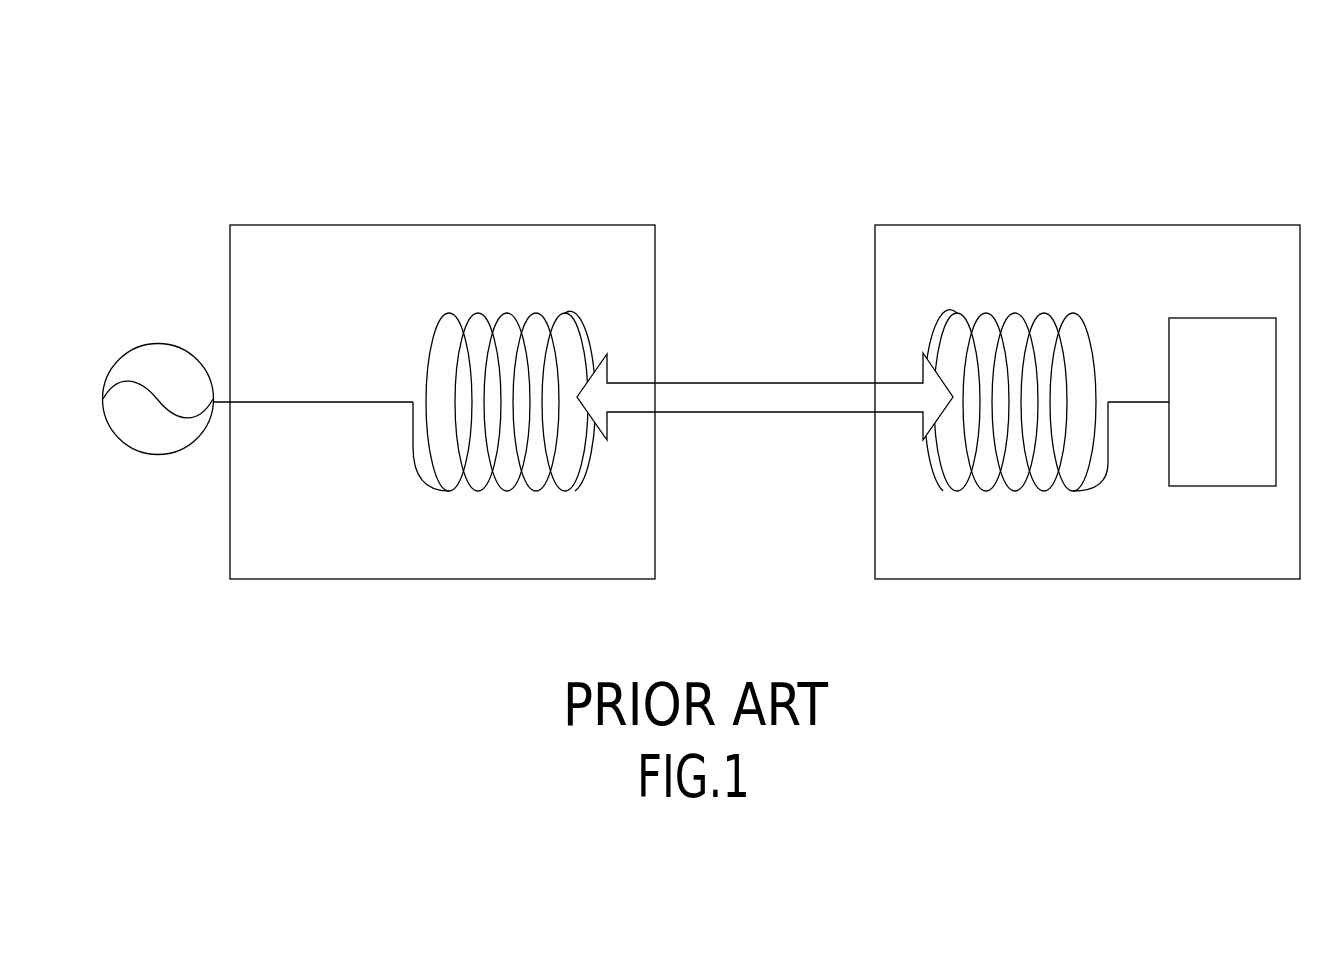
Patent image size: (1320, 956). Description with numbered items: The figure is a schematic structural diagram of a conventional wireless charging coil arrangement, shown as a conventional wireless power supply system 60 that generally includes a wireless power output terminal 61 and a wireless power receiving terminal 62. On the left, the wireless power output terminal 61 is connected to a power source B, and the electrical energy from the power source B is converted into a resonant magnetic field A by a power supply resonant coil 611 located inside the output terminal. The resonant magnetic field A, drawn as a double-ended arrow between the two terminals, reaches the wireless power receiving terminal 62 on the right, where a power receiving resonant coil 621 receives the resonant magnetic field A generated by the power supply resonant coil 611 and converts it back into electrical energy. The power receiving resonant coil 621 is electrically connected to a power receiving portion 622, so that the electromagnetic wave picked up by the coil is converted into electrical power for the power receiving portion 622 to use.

The wireless power supply system 60 is at (378, 160).
The wireless power output terminal 61 is at (226, 216).
The power supply resonant coil 611 is at (530, 317).
The wireless power receiving terminal 62 is at (1268, 205).
The power receiving resonant coil 621 is at (1017, 313).
The power receiving portion 622 is at (1208, 335).
The resonant magnetic field A is at (768, 403).
The power source B is at (143, 350).